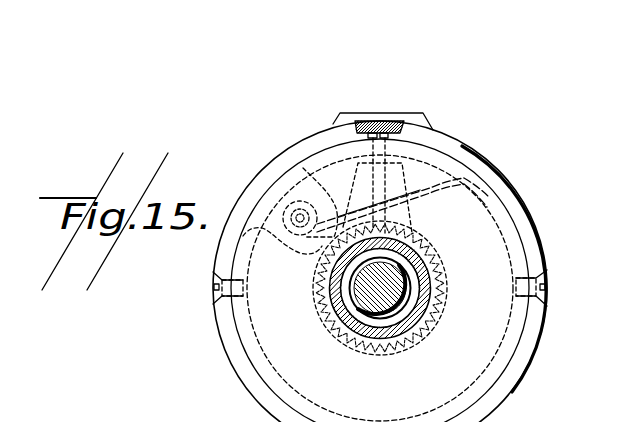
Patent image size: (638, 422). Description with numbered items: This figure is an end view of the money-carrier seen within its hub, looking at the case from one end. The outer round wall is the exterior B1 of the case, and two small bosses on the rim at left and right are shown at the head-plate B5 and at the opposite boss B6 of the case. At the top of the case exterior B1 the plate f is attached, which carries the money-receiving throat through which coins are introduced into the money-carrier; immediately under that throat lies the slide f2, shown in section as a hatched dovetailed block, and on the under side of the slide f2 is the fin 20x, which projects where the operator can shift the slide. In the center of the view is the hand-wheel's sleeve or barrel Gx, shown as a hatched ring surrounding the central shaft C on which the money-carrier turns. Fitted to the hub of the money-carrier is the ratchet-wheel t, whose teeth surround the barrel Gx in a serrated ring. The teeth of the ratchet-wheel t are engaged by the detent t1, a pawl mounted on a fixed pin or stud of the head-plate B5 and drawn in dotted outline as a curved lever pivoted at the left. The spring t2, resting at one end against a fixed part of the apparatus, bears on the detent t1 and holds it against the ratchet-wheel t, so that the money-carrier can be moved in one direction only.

The exterior of the case B1 is at (504, 142).
The head-plate B5 is at (250, 323).
The casing boss B6 is at (536, 277).
The fin 20x is at (425, 130).
The slide f2 is at (367, 121).
The plate f is at (412, 113).
The detent t1 is at (310, 233).
The spring t2 is at (417, 190).
The ratchet-wheel t is at (434, 279).
The sleeve or barrel Gx is at (345, 315).
The shaft C is at (381, 297).